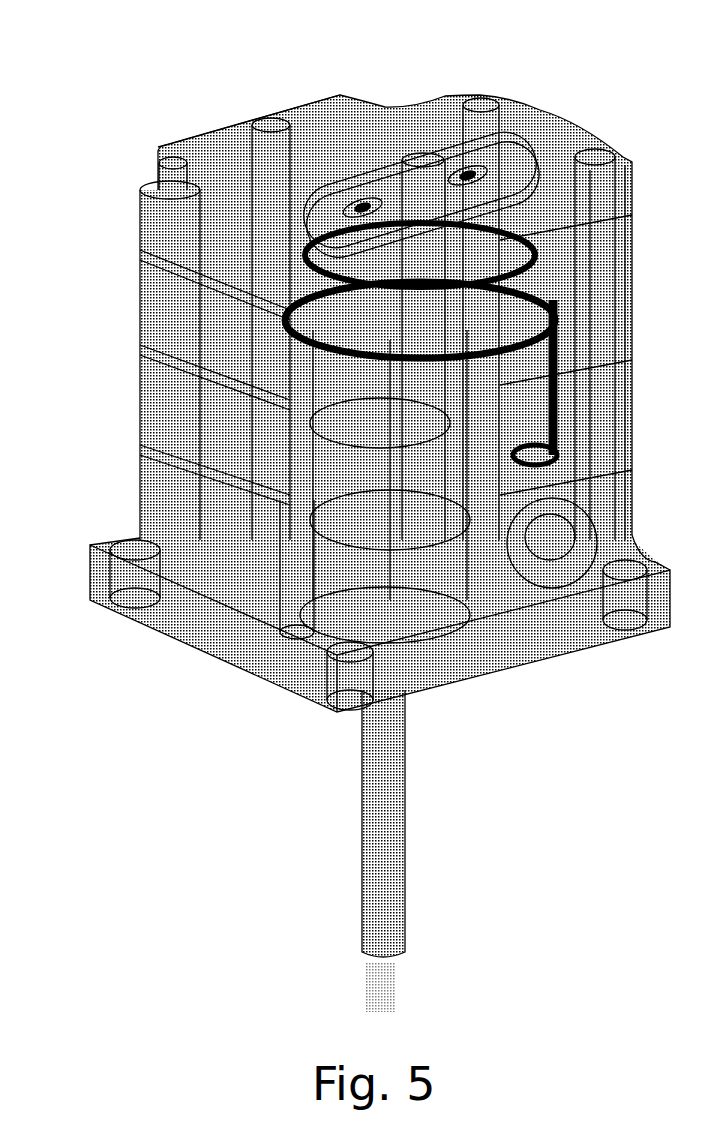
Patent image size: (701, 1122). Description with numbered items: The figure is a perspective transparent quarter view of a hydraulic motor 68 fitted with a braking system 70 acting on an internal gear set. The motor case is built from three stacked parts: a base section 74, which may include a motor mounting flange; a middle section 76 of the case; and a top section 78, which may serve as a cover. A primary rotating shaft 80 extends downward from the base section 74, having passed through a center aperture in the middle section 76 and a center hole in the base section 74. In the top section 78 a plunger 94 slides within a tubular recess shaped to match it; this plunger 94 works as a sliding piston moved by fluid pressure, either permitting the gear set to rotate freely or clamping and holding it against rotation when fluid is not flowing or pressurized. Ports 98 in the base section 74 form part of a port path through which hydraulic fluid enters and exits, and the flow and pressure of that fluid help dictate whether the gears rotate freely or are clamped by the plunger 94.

The hydraulic motor 68 is at (510, 97).
The braking system 70 is at (387, 147).
The base section 74 is at (150, 493).
The middle section 76 is at (140, 398).
The top section 78 is at (140, 256).
The primary rotating shaft 80 is at (382, 858).
The plunger 94 is at (508, 178).
The ports 98 is at (565, 562).